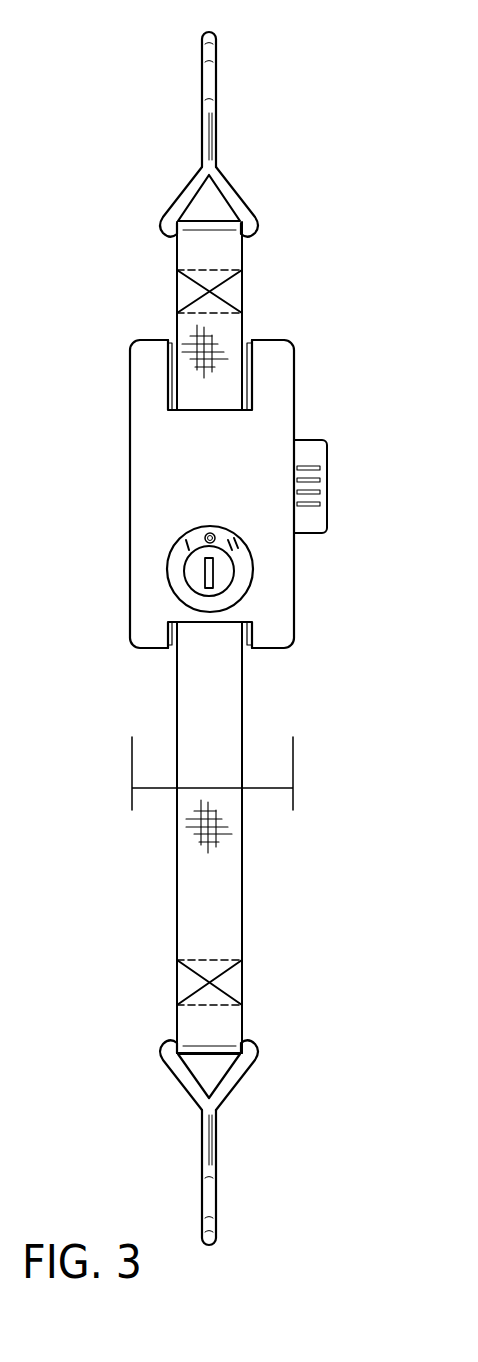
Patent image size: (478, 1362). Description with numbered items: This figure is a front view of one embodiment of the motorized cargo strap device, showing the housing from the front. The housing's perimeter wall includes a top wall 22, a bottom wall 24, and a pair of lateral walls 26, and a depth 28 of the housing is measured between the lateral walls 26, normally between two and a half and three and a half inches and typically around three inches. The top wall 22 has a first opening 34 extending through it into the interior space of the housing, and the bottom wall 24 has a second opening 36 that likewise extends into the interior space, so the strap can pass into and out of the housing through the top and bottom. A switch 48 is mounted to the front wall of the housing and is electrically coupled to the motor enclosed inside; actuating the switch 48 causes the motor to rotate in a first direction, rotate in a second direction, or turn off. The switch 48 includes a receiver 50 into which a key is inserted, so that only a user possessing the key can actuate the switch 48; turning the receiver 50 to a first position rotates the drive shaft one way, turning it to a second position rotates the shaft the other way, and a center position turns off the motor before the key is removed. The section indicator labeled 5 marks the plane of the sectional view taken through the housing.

The section line 5- 5 is at (168, 45).
The top wall 22 is at (159, 339).
The bottom wall 24 is at (272, 649).
The lateral walls 26 is at (129, 450).
The depth 28 is at (220, 789).
The first opening 34 is at (247, 338).
The second opening 36 is at (172, 653).
The switch 48 is at (259, 572).
The receiver 50 is at (205, 573).